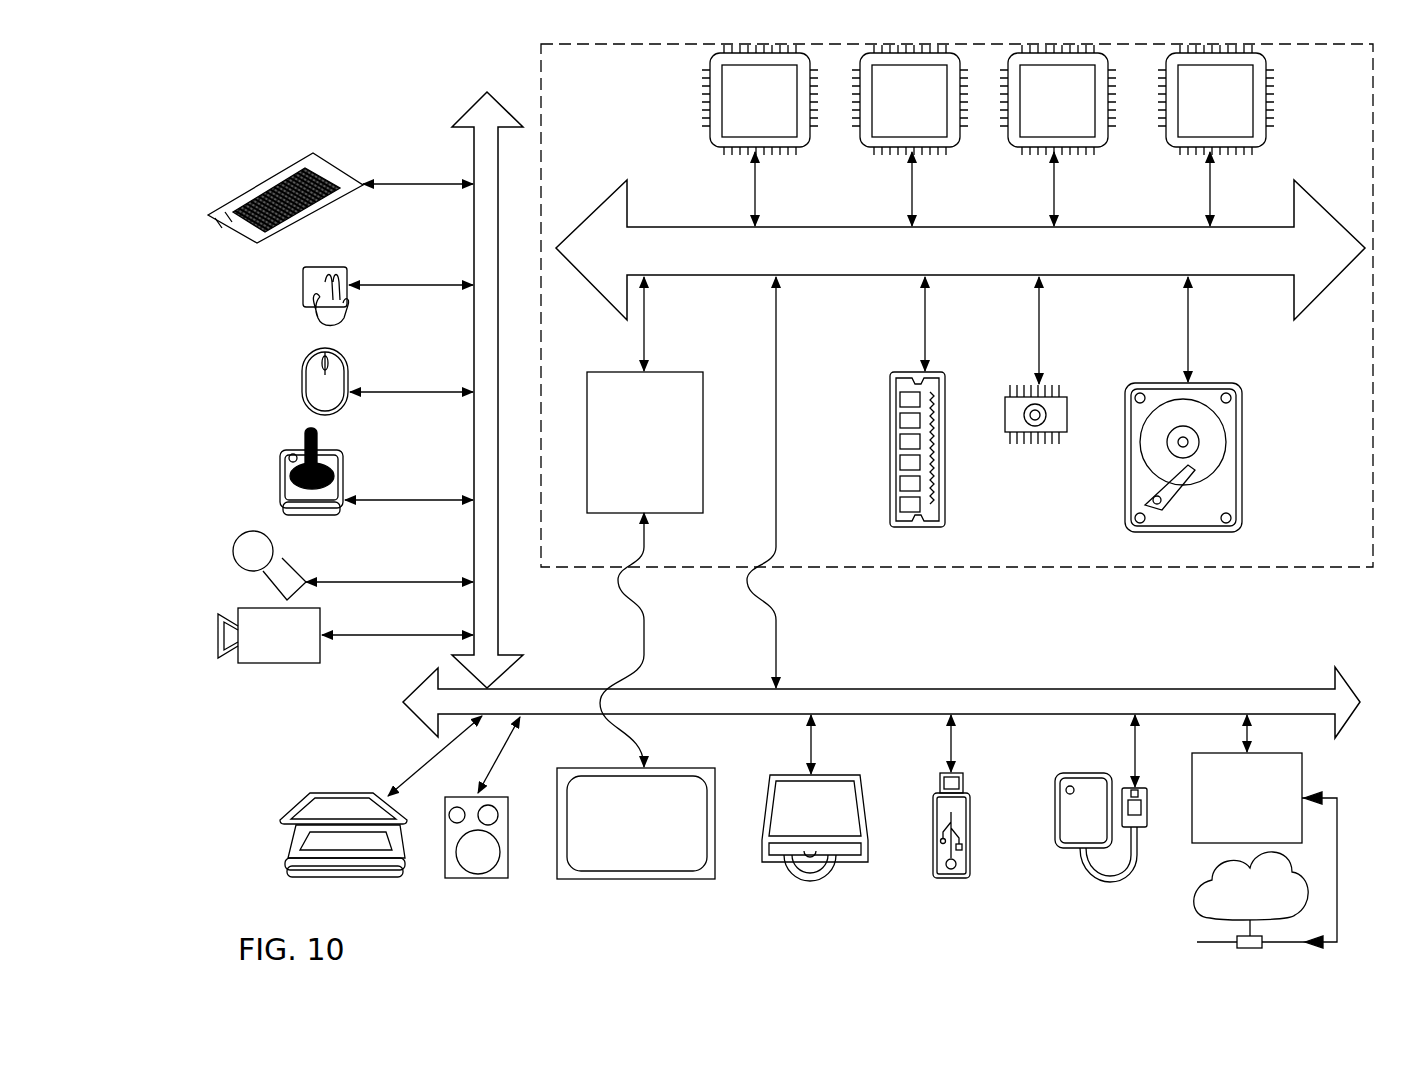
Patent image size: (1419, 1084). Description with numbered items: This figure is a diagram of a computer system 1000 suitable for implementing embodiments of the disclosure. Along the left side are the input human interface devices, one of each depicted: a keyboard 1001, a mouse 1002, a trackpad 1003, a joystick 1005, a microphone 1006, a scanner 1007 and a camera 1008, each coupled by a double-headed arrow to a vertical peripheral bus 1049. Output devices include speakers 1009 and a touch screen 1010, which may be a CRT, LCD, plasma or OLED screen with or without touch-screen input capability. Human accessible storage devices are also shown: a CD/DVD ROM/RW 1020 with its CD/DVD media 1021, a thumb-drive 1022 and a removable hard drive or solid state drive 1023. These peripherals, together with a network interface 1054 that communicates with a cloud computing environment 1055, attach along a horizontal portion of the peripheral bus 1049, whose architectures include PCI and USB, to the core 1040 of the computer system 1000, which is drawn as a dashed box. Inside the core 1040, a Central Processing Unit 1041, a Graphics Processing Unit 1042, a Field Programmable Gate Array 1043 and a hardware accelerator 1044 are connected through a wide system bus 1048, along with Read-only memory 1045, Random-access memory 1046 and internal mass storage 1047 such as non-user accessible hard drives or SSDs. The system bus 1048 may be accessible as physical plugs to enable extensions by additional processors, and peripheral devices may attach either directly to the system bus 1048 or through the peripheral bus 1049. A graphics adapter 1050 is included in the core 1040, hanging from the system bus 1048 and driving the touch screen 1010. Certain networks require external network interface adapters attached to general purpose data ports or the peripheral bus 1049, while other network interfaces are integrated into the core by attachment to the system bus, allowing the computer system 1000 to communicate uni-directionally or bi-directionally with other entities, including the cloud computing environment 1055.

The computer system 1000 is at (276, 92).
The keyboard 1001 is at (207, 215).
The mouse 1002 is at (293, 383).
The trackpad 1003 is at (293, 300).
The joystick 1005 is at (280, 490).
The microphone 1006 is at (233, 548).
The scanner 1007 is at (287, 860).
The camera 1008 is at (218, 640).
The speakers 1009 is at (479, 878).
The touch screen 1010 is at (627, 880).
The CD/DVD ROM/RW 1020 is at (857, 865).
The CD/DVD media 1021 is at (797, 872).
The thumb-drive 1022 is at (950, 880).
The removable hard drive or solid state drive 1023 is at (1055, 850).
The core 1040 is at (978, 568).
The Central Processing Unit 1041 is at (733, 126).
The Graphics Processing Unit 1042 is at (883, 126).
The Field Programmable Gate Array 1043 is at (1031, 126).
The hardware accelerator 1044 is at (1189, 126).
The Read-only memory 1045 is at (1027, 442).
The Random-access memory 1046 is at (890, 447).
The internal mass storage 1047 is at (1130, 383).
The system bus 1048 is at (1102, 264).
The peripheral bus 1049 is at (474, 130).
The graphics adapter 1050 is at (681, 522).
The network interface 1054 is at (1220, 836).
The cloud computing environment 1055 is at (1197, 905).